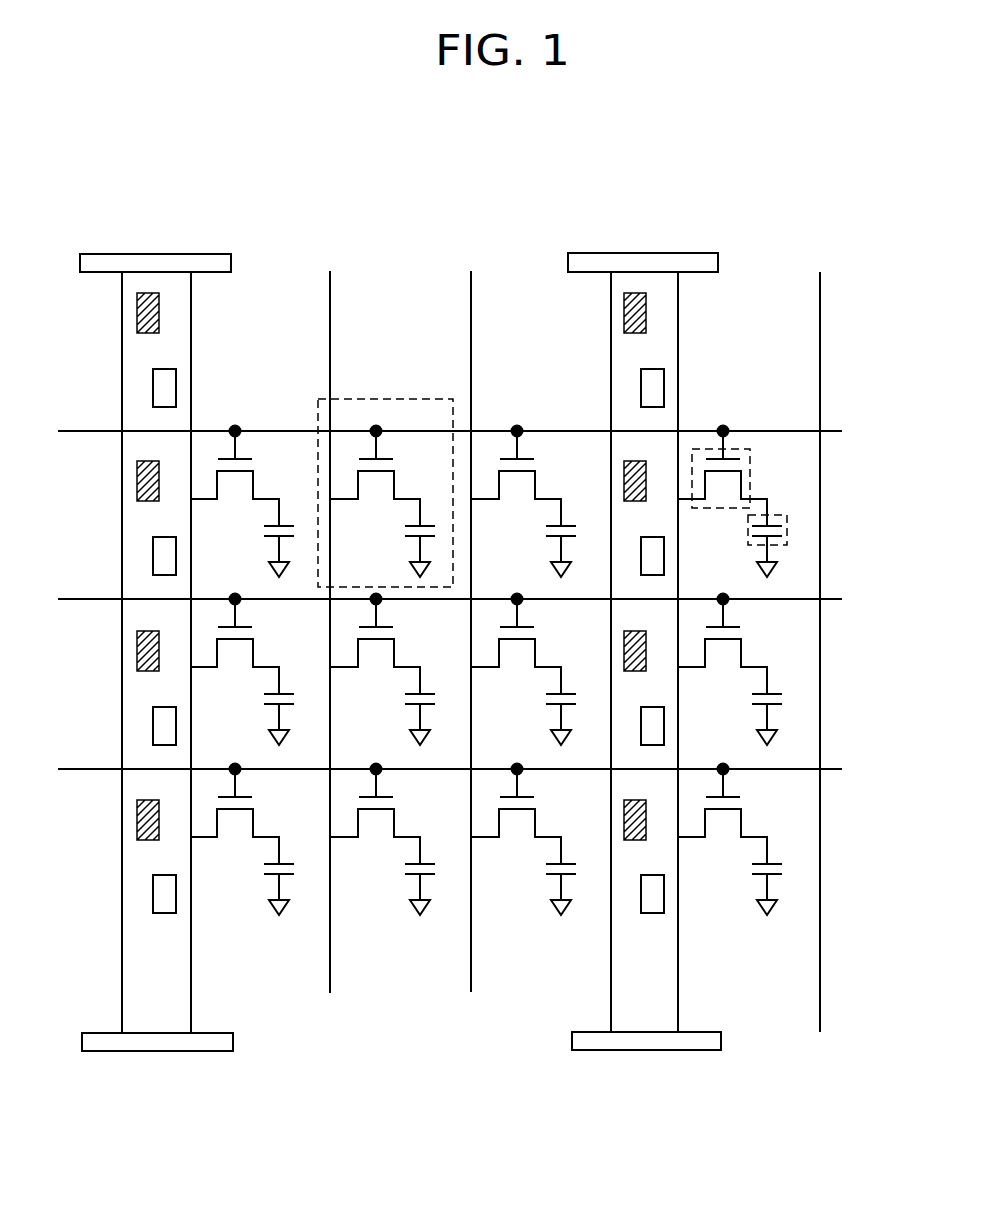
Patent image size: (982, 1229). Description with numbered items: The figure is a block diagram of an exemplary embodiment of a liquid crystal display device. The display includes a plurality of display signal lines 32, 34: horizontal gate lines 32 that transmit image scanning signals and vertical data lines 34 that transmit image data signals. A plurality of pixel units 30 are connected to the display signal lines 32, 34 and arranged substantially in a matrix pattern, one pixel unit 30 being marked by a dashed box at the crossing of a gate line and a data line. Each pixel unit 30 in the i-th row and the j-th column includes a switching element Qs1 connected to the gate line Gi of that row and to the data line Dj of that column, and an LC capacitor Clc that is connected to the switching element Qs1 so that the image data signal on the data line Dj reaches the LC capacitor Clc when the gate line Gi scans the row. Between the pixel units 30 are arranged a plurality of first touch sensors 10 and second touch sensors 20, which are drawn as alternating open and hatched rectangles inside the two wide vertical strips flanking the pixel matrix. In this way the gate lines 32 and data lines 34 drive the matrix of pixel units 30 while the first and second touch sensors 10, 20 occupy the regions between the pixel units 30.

The first touch sensor 10 is at (641, 388).
The second touch sensor 20 is at (630, 292).
The pixel unit 30 is at (384, 398).
The gate lines 32 is at (112, 431).
The data lines 34 is at (332, 980).
The data line Dj is at (817, 293).
The gate line Gi is at (834, 431).
The switching element Qs1 is at (751, 468).
The LC capacitor Clc is at (789, 530).